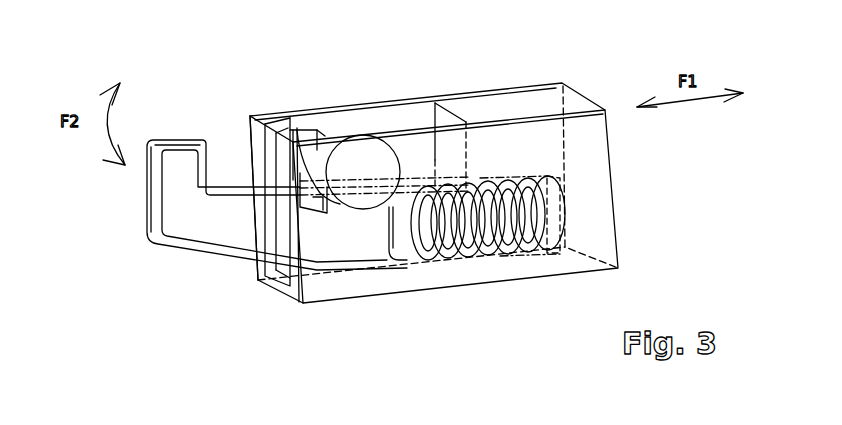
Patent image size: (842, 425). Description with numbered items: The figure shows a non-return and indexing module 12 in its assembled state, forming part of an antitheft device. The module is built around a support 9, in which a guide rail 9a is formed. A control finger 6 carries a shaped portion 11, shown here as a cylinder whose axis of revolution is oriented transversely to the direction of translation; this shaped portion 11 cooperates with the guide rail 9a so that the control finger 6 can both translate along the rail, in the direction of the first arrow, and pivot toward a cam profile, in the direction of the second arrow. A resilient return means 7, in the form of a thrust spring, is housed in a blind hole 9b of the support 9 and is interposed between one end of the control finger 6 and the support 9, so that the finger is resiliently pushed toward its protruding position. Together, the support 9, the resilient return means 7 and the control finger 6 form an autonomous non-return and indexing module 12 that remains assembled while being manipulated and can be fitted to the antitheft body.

The control finger 6 is at (175, 122).
The resilient return means 7 is at (417, 248).
The support 9 is at (503, 93).
The guide rail 9a is at (408, 115).
The blind hole 9b is at (558, 207).
The shaped portion 11 is at (338, 125).
The non-return and indexing module 12 is at (267, 302).